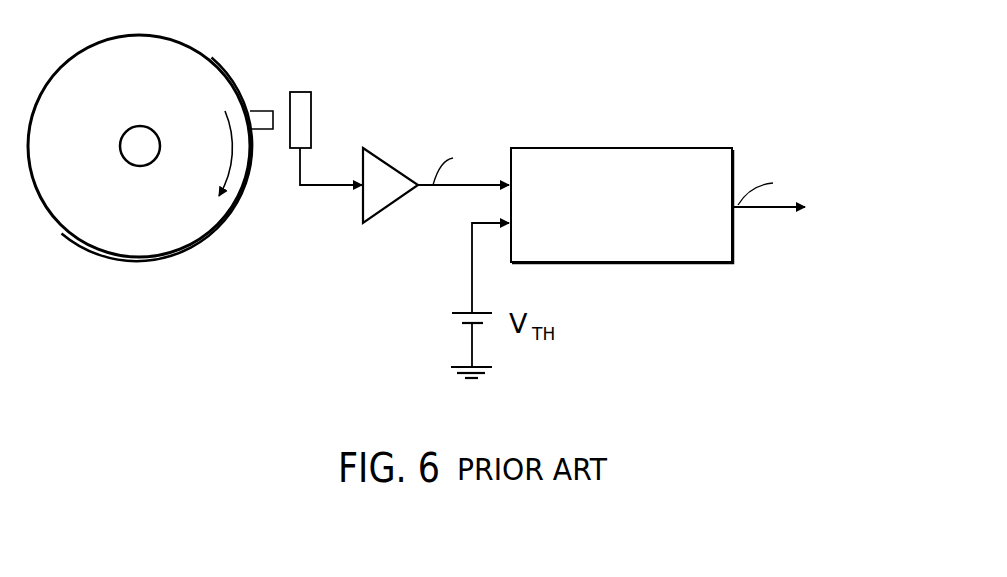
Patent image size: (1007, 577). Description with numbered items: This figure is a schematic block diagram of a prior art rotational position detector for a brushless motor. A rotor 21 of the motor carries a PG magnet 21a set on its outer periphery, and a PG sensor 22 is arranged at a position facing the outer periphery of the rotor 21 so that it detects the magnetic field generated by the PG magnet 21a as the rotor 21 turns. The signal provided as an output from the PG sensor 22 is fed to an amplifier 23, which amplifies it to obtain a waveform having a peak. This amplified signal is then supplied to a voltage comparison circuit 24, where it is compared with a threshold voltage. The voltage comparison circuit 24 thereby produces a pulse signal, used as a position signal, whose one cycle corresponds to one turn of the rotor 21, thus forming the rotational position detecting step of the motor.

The rotor 21 is at (228, 72).
The PG magnet 21a is at (261, 129).
The PG sensor 22 is at (312, 128).
The amplifier 23 is at (362, 203).
The voltage comparison circuit 24 is at (618, 263).